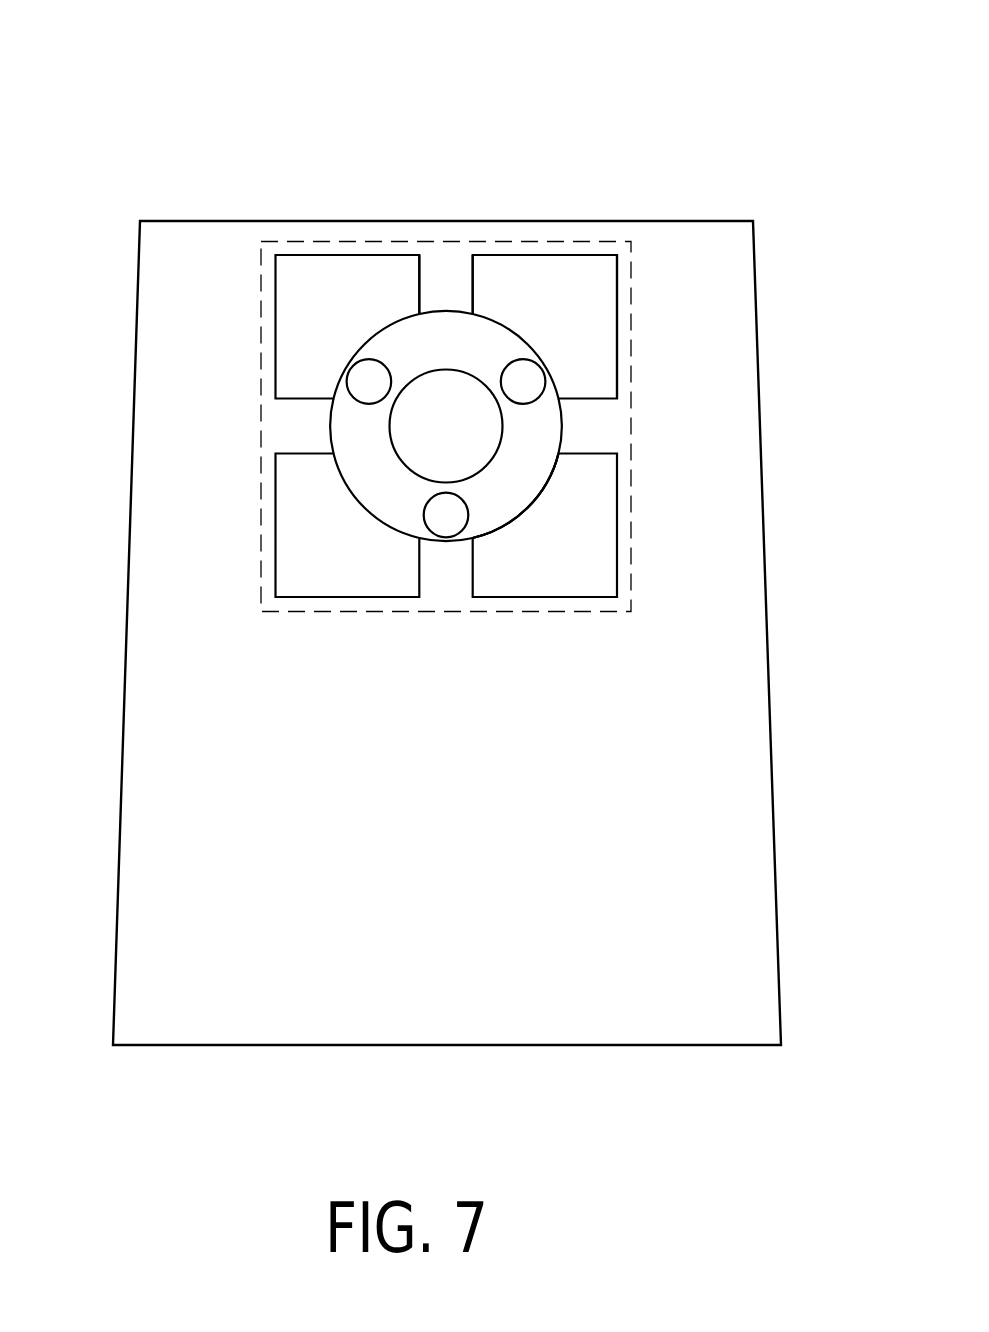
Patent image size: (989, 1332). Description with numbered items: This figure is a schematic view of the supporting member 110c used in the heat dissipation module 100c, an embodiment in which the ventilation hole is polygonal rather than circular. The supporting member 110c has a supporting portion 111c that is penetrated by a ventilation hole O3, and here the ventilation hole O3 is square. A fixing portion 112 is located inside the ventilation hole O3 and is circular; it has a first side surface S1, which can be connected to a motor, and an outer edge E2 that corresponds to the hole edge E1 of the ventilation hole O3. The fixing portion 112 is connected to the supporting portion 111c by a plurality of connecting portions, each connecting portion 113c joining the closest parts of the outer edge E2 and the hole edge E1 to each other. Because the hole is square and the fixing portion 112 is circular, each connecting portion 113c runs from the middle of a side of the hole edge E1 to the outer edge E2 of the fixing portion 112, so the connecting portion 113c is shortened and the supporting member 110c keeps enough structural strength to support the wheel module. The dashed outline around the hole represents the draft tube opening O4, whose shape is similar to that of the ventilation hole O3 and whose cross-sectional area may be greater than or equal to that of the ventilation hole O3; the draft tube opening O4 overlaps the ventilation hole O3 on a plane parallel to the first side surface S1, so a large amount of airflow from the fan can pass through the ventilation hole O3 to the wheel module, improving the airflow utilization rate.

The heat dissipation module 100c is at (118, 48).
The supporting member 110c is at (556, 372).
The supporting portion 111c is at (322, 230).
The fixing portion 112 is at (405, 350).
The connecting portion 113c is at (452, 286).
The ventilation hole O3 is at (617, 372).
The draft tube opening O4 is at (632, 462).
The first side surface S1 is at (500, 497).
The outer edge E2 is at (498, 533).
The hole edge E1 is at (587, 595).